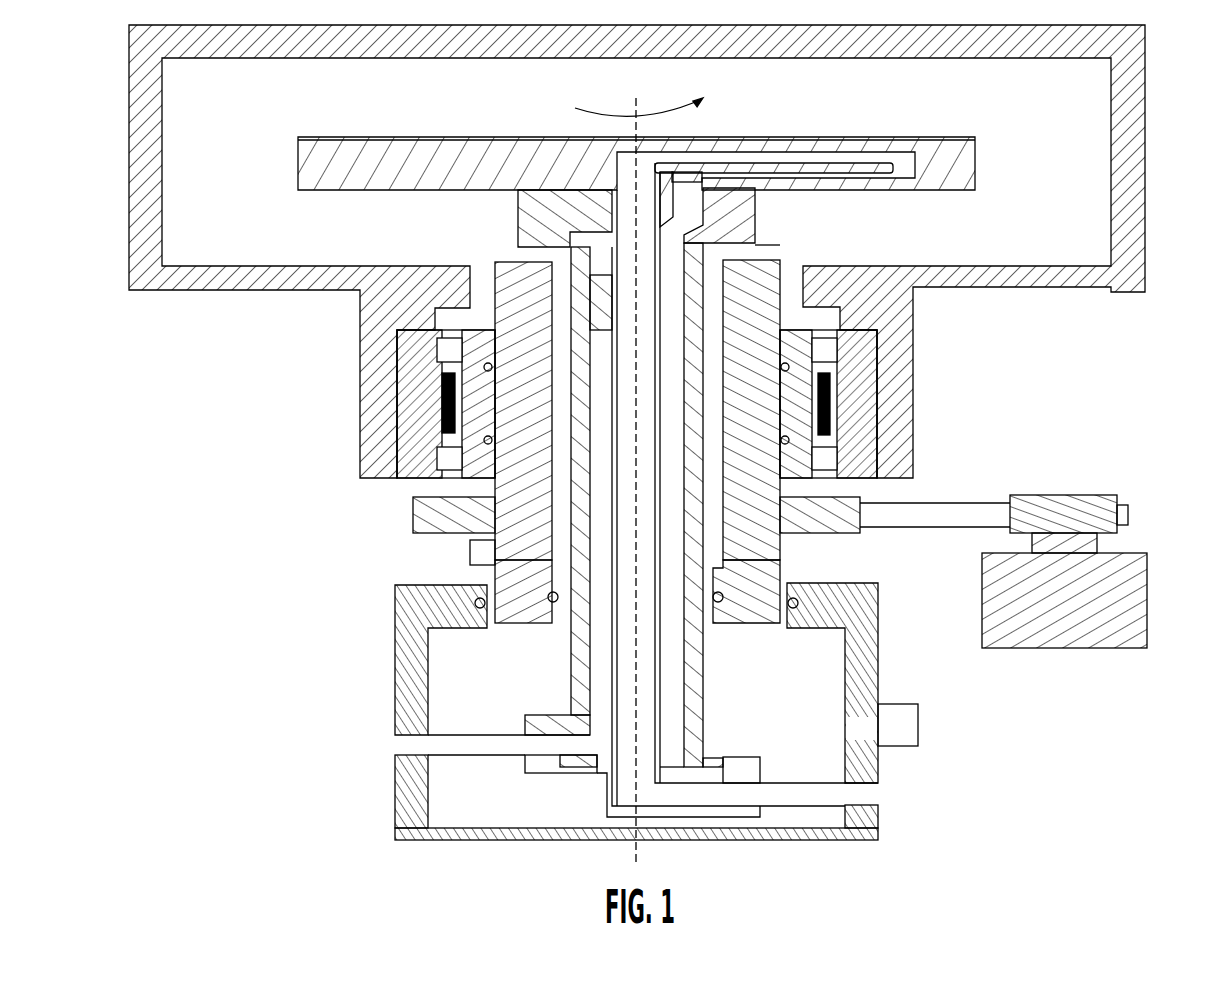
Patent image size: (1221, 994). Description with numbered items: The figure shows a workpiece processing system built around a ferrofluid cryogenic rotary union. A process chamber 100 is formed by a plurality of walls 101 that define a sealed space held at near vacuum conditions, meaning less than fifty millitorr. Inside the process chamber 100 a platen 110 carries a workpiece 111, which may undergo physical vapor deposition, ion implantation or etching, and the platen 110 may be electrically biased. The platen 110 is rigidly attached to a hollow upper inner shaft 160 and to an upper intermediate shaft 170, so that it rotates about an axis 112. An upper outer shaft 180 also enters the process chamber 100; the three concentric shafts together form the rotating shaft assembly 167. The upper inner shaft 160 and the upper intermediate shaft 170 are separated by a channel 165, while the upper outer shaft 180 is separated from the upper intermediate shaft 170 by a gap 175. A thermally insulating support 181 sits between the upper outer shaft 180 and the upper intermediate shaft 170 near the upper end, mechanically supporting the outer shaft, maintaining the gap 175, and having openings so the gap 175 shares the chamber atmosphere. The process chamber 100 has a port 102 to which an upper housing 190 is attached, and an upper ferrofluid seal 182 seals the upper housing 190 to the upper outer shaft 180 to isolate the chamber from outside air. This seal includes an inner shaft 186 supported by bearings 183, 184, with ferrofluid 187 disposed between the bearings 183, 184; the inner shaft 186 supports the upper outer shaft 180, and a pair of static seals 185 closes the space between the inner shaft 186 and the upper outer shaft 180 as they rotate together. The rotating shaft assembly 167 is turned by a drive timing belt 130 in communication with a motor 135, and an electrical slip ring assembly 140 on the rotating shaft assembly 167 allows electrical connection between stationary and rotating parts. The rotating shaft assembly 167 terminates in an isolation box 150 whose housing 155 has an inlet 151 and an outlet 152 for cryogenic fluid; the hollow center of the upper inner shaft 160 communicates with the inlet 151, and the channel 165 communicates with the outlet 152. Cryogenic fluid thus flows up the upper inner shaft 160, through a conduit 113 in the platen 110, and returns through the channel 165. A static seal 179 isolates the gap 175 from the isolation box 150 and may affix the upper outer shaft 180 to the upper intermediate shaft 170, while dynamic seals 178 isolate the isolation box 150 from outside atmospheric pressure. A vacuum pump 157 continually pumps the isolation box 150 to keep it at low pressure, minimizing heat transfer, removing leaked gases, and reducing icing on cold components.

The process chamber 100 is at (670, 251).
The walls 101 is at (1145, 112).
The port 102 is at (616, 415).
The platen 110 is at (603, 151).
The workpiece 111 is at (727, 118).
The axis 112 is at (632, 100).
The conduit 113 is at (847, 160).
The drive timing belt 130 is at (950, 514).
The motor 135 is at (1086, 488).
The electrical slip ring assembly 140 is at (470, 553).
The isolation box 150 is at (805, 840).
The inlet 151 is at (875, 800).
The outlet 152 is at (407, 747).
The housing 155 is at (407, 805).
The vacuum pump 157 is at (918, 725).
The upper inner shaft 160 is at (605, 273).
The channel 165 is at (582, 245).
The rotating shaft assembly 167 is at (767, 555).
The upper intermediate shaft 170 is at (765, 212).
The gap 175 is at (727, 353).
The dynamic seals 178 is at (475, 609).
The static seal 179 is at (540, 595).
The upper outer shaft 180 is at (798, 290).
The support 181 is at (775, 248).
The upper ferrofluid seal 182 is at (460, 484).
The bearing 183 is at (832, 460).
The bearing 184 is at (800, 355).
The static seals 185 is at (476, 440).
The inner shaft 186 is at (832, 405).
The ferrofluid 187 is at (447, 413).
The upper housing 190 is at (616, 422).